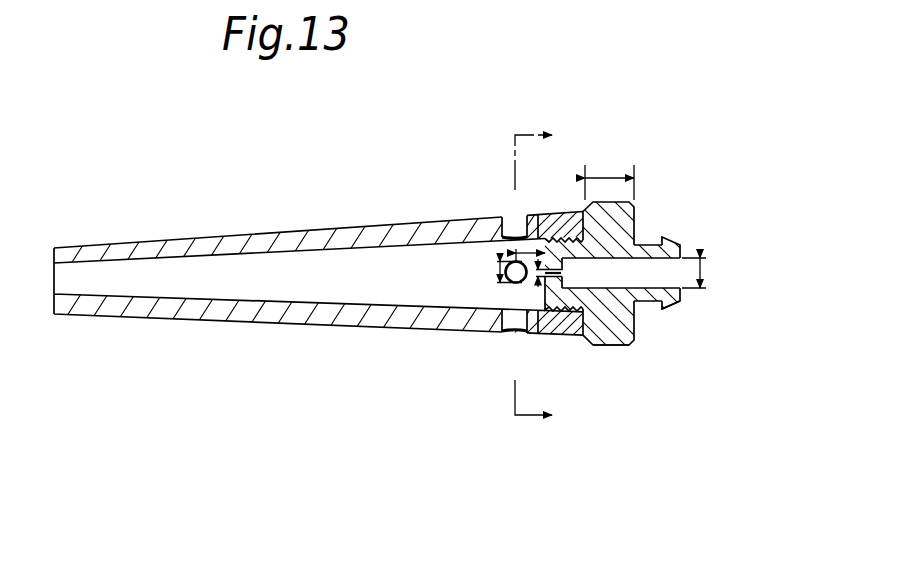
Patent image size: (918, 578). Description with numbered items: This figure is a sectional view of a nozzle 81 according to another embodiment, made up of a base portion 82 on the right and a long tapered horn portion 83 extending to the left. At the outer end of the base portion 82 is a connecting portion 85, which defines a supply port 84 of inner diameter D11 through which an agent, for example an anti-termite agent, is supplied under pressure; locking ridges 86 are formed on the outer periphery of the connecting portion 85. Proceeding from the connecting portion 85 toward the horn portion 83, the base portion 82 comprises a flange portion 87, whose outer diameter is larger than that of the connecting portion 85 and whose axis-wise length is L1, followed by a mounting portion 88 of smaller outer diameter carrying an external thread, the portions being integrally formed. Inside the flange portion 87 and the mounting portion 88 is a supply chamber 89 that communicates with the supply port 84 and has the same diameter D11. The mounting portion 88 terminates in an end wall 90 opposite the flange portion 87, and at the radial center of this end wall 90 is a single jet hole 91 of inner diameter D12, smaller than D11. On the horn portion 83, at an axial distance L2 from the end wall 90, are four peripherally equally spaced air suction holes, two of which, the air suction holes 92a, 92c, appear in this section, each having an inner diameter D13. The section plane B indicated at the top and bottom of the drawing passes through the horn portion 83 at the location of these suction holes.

The nozzle 81 is at (182, 127).
The base portion 82 is at (681, 175).
The horn portion 83 is at (205, 233).
The supply port 84 is at (665, 308).
The connecting portion 85 is at (652, 302).
The locking ridges 86 is at (678, 241).
The flange portion 87 is at (612, 346).
The mounting portion 88 is at (563, 336).
The supply chamber 89 is at (622, 268).
The end wall 90 is at (498, 311).
The jet hole 91 is at (562, 273).
The air suction hole 92a is at (510, 225).
The air suction hole 92c is at (515, 329).
The inner diameter of supply port D11 is at (725, 279).
The inner diameter of jet hole D12 is at (535, 283).
The inner diameter of air suction hole D13 is at (497, 265).
The axis-wise length of flange portion L1 is at (610, 177).
The axial distance L2 is at (533, 251).
The section line B- B is at (533, 274).